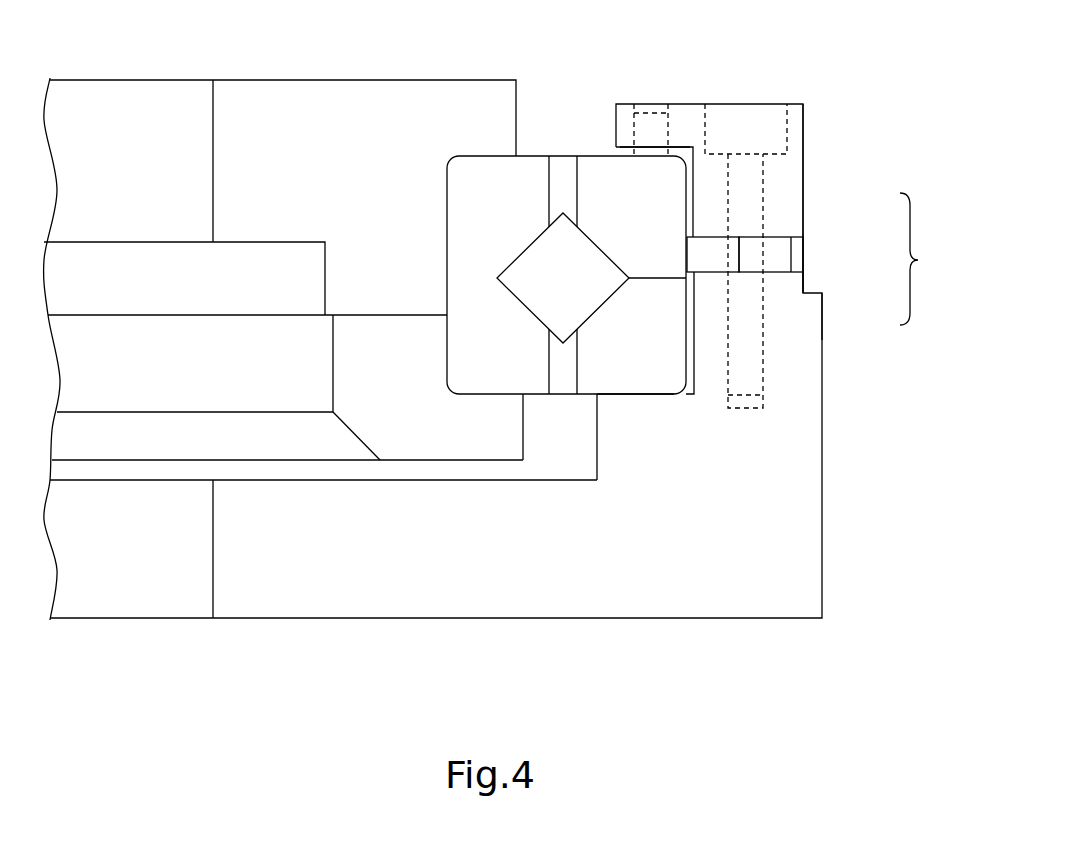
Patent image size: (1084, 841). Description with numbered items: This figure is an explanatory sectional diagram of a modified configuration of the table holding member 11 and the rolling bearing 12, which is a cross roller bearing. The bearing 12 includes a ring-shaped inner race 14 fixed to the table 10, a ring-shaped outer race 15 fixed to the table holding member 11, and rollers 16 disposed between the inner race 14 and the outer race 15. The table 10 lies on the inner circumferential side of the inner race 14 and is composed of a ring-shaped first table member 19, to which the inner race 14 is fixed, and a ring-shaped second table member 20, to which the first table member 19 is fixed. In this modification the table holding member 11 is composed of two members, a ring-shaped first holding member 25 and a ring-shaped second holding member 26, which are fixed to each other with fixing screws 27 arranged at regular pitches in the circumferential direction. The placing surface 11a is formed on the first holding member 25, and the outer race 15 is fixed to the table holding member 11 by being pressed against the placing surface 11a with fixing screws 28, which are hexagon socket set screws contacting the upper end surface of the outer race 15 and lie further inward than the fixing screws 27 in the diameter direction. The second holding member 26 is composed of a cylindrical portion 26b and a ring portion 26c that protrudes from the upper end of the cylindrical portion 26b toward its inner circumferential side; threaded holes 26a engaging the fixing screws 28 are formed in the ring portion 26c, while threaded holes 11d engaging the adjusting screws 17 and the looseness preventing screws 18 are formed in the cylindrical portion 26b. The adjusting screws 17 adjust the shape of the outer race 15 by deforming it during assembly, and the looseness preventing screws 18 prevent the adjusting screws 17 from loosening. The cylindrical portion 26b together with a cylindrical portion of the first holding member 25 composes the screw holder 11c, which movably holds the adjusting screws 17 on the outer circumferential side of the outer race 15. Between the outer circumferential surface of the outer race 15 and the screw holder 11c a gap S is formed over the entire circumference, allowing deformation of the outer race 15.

The table 10 is at (280, 319).
The second table member 20 is at (310, 78).
The table holding member 11 is at (435, 487).
The first holding member 25 is at (435, 622).
The placing surface 11a is at (632, 392).
The screw holder 11c is at (933, 259).
The threaded holes 11d is at (779, 240).
The rolling bearing 12 is at (582, 227).
The outer race 15 is at (598, 155).
The inner race 14 is at (526, 155).
The rollers 16 is at (523, 252).
The adjusting screws 17 is at (703, 275).
The looseness preventing screws 18 is at (775, 275).
The first table member 19 is at (523, 433).
The second holding member 26 is at (748, 154).
The threaded holes 26a is at (666, 126).
The cylindrical portion 26b is at (803, 216).
The ring portion 26c is at (626, 103).
The fixing screws 27 is at (763, 367).
The fixing screws 28 is at (651, 157).
The gap S is at (692, 373).